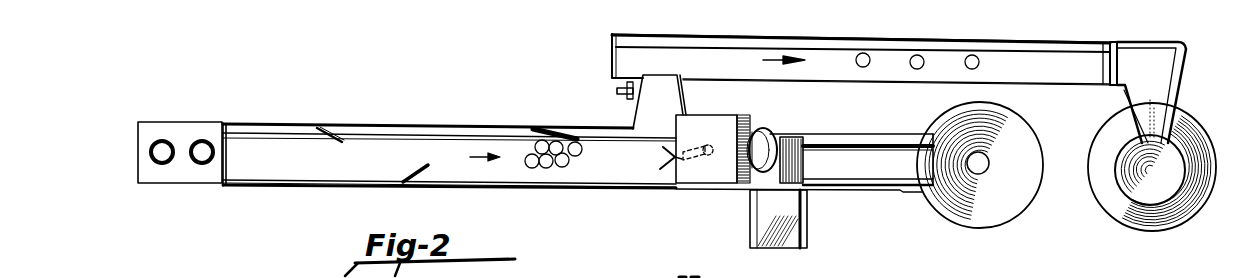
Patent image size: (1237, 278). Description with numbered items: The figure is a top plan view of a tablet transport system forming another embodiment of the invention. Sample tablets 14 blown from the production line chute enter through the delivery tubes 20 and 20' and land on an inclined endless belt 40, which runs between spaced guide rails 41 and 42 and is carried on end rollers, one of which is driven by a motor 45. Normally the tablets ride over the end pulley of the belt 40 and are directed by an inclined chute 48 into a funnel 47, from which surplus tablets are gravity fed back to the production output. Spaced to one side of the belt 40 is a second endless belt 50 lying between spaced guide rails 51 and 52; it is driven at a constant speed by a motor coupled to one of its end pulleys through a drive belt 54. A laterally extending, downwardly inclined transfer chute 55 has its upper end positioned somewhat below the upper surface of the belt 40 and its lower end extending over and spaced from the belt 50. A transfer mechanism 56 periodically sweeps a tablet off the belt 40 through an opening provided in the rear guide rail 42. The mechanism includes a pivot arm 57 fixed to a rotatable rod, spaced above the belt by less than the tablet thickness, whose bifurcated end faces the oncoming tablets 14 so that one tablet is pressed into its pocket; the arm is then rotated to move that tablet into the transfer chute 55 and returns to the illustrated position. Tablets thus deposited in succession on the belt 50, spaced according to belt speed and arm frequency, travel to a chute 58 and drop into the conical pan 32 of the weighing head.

The tablets 14 is at (533, 168).
The delivery tube 20 is at (169, 134).
The delivery tube 20' is at (198, 124).
The conical pan 32 is at (1203, 128).
The endless belt 40 is at (268, 146).
The guide rail 41 is at (284, 188).
The rear guide rail 42 is at (377, 125).
The motor 45 is at (807, 218).
The funnel 47 is at (1028, 208).
The inclined chute 48 is at (851, 143).
The second endless belt 50 is at (815, 64).
The guide rail 51 is at (1043, 87).
The guide rail 52 is at (1068, 42).
The drive belt 54 is at (617, 91).
The transfer chute 55 is at (670, 96).
The transfer mechanism 56 is at (708, 178).
The pivot arm 57 is at (660, 170).
The chute 58 is at (1187, 56).